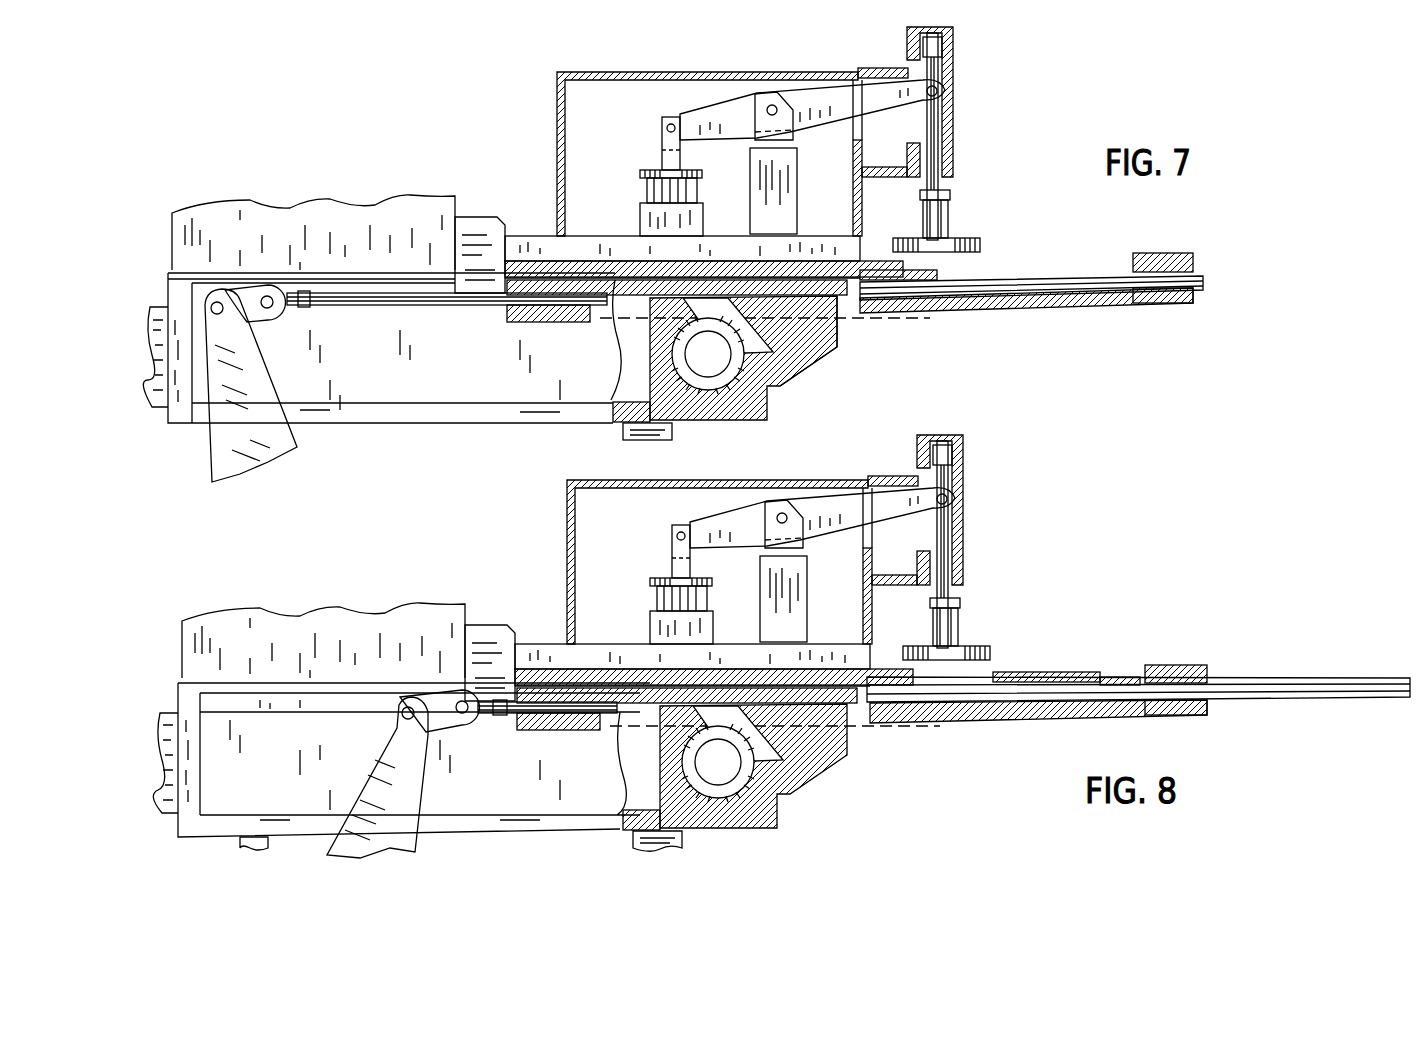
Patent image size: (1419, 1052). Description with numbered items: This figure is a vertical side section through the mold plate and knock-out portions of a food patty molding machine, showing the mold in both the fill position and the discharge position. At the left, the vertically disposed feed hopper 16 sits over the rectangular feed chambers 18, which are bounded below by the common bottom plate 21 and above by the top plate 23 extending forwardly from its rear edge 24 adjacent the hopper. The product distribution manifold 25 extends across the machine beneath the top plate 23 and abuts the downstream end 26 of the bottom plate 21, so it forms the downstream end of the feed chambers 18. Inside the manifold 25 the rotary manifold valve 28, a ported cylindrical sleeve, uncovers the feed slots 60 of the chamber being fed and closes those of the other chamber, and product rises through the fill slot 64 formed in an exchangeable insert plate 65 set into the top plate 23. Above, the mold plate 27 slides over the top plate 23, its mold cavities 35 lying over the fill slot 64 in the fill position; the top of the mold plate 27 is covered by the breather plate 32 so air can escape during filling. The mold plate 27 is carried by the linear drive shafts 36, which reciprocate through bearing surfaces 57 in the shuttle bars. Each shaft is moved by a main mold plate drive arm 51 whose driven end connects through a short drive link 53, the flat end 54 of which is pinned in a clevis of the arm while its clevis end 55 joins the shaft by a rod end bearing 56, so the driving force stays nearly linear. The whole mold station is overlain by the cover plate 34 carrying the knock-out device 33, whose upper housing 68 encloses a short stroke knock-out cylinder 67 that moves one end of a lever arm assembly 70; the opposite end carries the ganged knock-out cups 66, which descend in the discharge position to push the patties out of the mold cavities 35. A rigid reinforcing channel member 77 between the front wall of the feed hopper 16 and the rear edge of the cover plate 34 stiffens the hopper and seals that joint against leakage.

In FIG. 7, the feed hopper 16 is at (215, 225).
In FIG. 8, the feed hopper 16 is at (323, 627).
In FIG. 7, the feed chambers 18 is at (613, 422).
In FIG. 8, the bottom plate 21 is at (513, 823).
In FIG. 7, the top plate 23 is at (630, 280).
In FIG. 8, the top plate 23 is at (714, 641).
In FIG. 7, the rear edge 24 is at (427, 280).
In FIG. 7, the product distribution manifold 25 is at (688, 410).
In FIG. 8, the product distribution manifold 25 is at (731, 794).
In FIG. 8, the downstream end 26 is at (670, 849).
In FIG. 7, the mold plate 27 is at (870, 272).
In FIG. 8, the mold plate 27 is at (1066, 654).
In FIG. 7, the rotary manifold valve 28 is at (773, 387).
In FIG. 8, the rotary manifold valve 28 is at (753, 766).
In FIG. 7, the breather plate 32 is at (810, 263).
In FIG. 8, the breather plate 32 is at (824, 629).
In FIG. 7, the knock-out device 33 is at (891, 49).
In FIG. 8, the knock-out device 33 is at (917, 525).
In FIG. 7, the cover plate 34 is at (548, 250).
In FIG. 8, the cover plate 34 is at (692, 632).
In FIG. 7, the mold cavities 35 is at (715, 268).
In FIG. 8, the mold cavities 35 is at (1138, 655).
In FIG. 7, the linear drive shafts 36 is at (418, 303).
In FIG. 8, the linear drive shafts 36 is at (862, 722).
In FIG. 7, the main mold plate drive arm 51 is at (273, 430).
In FIG. 8, the main mold plate drive arm 51 is at (325, 852).
In FIG. 7, the drive link 53 is at (258, 290).
In FIG. 8, the drive link 53 is at (437, 697).
In FIG. 8, the flat end 54 is at (440, 693).
In FIG. 8, the clevis end 55 is at (460, 720).
In FIG. 7, the rod end bearing 56 is at (290, 305).
In FIG. 8, the rod end bearing 56 is at (482, 695).
In FIG. 7, the bearing surfaces 57 is at (507, 308).
In FIG. 8, the feed slots 60 is at (653, 771).
In FIG. 7, the fill slot 64 is at (748, 232).
In FIG. 8, the fill slot 64 is at (783, 571).
In FIG. 7, the insert plate 65 is at (822, 343).
In FIG. 8, the knock-out cups 66 is at (954, 616).
In FIG. 8, the knock-out cylinder 67 is at (667, 584).
In FIG. 7, the upper housing 68 is at (557, 112).
In FIG. 8, the upper housing 68 is at (715, 560).
In FIG. 7, the lever arm assembly 70 is at (820, 100).
In FIG. 8, the lever arm assembly 70 is at (822, 498).
In FIG. 7, the reinforcing channel member 77 is at (488, 225).